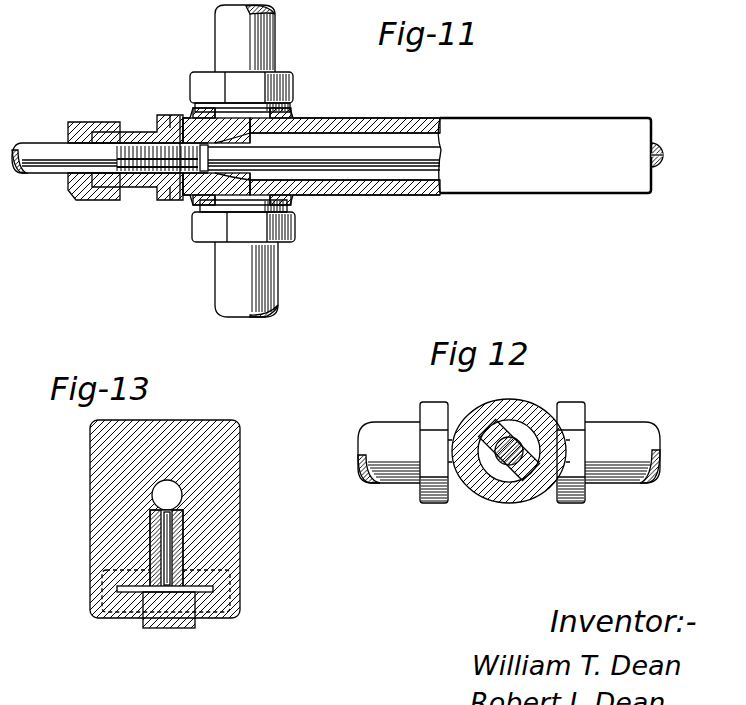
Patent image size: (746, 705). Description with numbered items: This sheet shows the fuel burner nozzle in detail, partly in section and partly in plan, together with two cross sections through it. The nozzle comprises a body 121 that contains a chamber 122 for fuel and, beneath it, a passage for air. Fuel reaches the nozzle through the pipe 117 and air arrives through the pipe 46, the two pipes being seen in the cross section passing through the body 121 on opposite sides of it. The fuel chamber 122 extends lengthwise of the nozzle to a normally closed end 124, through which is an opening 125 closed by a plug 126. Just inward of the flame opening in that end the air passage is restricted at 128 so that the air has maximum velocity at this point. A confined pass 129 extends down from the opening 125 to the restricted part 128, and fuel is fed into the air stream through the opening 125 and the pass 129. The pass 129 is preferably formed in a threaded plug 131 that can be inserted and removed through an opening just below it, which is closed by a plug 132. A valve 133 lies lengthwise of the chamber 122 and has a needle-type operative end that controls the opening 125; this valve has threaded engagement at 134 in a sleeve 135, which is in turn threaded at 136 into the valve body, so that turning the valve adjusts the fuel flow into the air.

In FIG. 11, the pipe 46 is at (240, 305).
In FIG. 12, the pipe 46 is at (622, 473).
In FIG. 11, the pipe 117 is at (252, 49).
In FIG. 12, the pipe 117 is at (388, 482).
In FIG. 11, the body 121 is at (472, 130).
In FIG. 12, the body 121 is at (497, 500).
In FIG. 11, the chamber 122 is at (400, 173).
In FIG. 13, the normally closed end 124 is at (223, 443).
In FIG. 13, the opening 125 is at (173, 492).
In FIG. 11, the plug 126 is at (658, 148).
In FIG. 13, the restricted part 128 is at (138, 617).
In FIG. 13, the confined pass 129 is at (167, 560).
In FIG. 13, the threaded plug 131 is at (187, 537).
In FIG. 13, the plug 132 is at (190, 630).
In FIG. 11, the valve 133 is at (323, 157).
In FIG. 12, the valve 133 is at (512, 432).
In FIG. 11, the threaded engagement 134 is at (101, 158).
In FIG. 11, the sleeve 135 is at (147, 178).
In FIG. 11, the threaded connection 136 is at (183, 118).